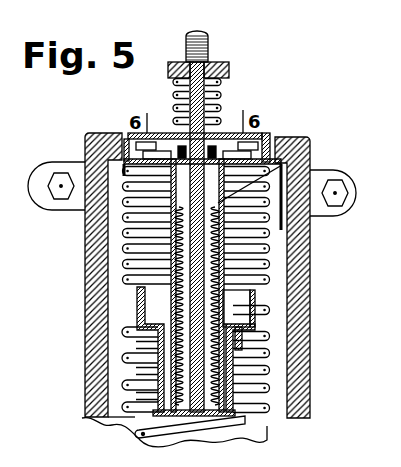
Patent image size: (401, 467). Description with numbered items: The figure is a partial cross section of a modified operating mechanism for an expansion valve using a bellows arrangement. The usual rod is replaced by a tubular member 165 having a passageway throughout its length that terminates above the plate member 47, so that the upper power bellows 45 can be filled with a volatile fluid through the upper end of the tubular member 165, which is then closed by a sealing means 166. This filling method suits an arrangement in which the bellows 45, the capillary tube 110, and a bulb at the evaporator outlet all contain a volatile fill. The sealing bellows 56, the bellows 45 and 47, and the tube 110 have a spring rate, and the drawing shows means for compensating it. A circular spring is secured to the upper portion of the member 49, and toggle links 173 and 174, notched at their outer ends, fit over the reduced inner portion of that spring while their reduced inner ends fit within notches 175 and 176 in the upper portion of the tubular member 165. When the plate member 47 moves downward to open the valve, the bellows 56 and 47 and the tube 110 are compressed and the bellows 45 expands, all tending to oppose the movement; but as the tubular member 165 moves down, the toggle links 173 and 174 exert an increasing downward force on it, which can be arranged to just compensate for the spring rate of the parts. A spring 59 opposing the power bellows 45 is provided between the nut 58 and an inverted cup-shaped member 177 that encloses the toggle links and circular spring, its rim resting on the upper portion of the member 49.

The sealing means 166 is at (204, 34).
The nut 58 is at (226, 68).
The tubular member 165 is at (173, 97).
The spring 59 is at (226, 100).
The notch 176 is at (168, 128).
The notch 175 is at (222, 140).
The toggle link 174 is at (262, 118).
The inverted cup-shaped member 177 is at (265, 134).
The member 49 is at (276, 136).
The sealing bellows 56 is at (313, 140).
The toggle link 173 is at (131, 133).
The power bellows 45 is at (272, 237).
The plate member 47 is at (253, 300).
The capillary tube 110 is at (248, 377).